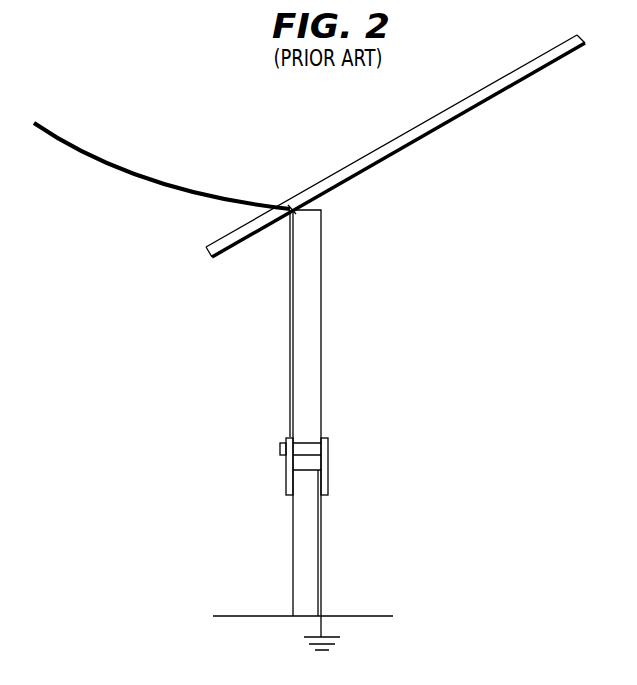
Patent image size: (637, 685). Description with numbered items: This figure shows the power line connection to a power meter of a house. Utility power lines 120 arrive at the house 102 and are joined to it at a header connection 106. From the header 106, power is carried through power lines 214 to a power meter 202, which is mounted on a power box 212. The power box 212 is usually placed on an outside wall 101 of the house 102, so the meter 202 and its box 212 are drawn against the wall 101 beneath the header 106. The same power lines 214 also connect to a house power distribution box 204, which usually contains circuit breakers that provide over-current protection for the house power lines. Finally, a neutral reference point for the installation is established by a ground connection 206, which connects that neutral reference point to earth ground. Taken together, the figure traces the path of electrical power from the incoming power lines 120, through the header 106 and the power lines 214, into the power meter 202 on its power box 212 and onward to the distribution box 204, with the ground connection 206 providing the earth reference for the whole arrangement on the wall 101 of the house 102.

The power lines 120 is at (177, 186).
The house 102 is at (374, 130).
The header connection 106 is at (290, 216).
The outside wall 101 is at (295, 392).
The power lines 214 is at (290, 375).
The power meter 202 is at (280, 448).
The power box 212 is at (286, 485).
The house power distribution box 204 is at (328, 463).
The ground connection 206 is at (322, 542).